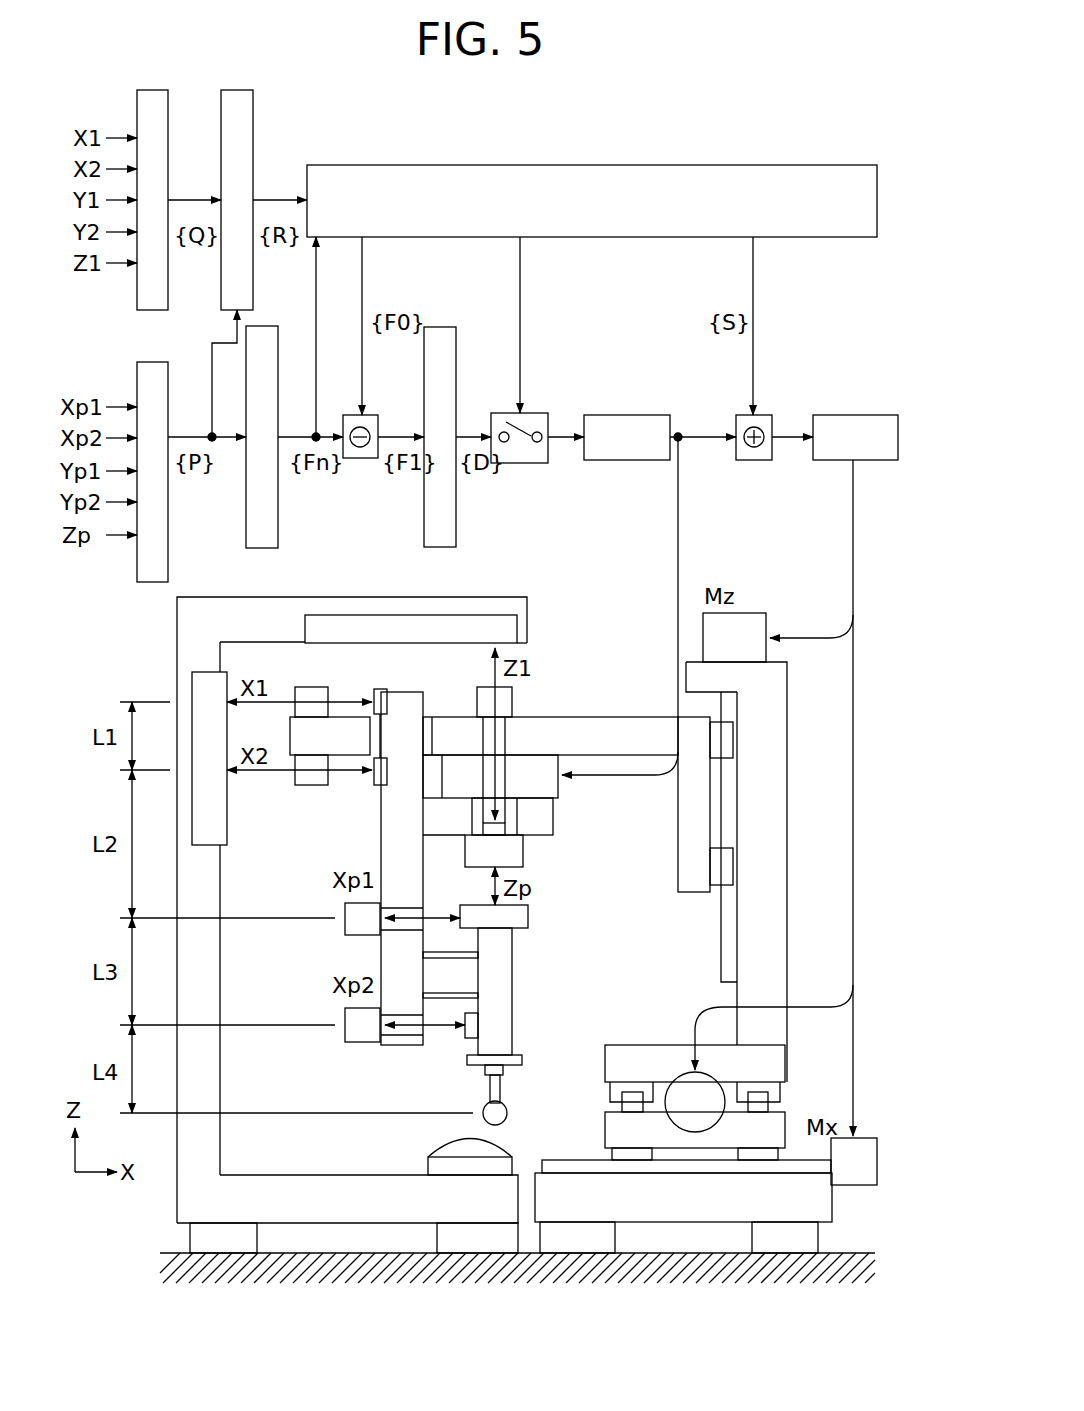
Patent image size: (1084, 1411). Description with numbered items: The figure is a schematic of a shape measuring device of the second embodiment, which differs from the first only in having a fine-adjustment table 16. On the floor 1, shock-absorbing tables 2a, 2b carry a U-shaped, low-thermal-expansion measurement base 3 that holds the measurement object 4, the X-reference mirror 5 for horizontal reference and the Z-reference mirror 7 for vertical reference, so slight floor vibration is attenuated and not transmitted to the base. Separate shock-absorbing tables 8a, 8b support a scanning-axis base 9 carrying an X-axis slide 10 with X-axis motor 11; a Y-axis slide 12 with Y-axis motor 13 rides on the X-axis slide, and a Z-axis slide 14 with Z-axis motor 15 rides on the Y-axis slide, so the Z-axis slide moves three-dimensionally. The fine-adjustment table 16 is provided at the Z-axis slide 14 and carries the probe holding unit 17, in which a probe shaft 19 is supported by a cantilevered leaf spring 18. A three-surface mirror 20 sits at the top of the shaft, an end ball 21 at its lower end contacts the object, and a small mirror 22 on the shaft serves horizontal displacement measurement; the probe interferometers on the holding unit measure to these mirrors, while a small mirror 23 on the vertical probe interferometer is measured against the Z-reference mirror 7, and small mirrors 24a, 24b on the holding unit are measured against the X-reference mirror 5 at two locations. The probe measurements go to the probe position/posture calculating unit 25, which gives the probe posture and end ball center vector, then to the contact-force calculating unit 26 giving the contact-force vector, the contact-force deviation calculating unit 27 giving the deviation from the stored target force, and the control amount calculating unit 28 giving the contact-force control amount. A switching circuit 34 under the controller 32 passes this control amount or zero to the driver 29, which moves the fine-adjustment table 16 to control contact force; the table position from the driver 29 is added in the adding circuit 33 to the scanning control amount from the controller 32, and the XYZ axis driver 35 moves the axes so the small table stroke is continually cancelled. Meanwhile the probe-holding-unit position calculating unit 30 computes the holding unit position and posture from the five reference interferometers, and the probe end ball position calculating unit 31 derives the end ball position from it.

The floor 1 is at (175, 1253).
The shock-absorbing table 2a is at (258, 1254).
The shock-absorbing table 2b is at (437, 1254).
The measurement base 3 is at (177, 1190).
The measurement object 4 is at (440, 1148).
The X-reference mirror 5 is at (210, 672).
The Z-reference mirror 7 is at (305, 627).
The shock-absorbing table 8a is at (540, 1254).
The shock-absorbing table 8b is at (752, 1254).
The scanning-axis base 9 is at (832, 1212).
The X-axis slide 10 is at (786, 1122).
The X-axis motor 11 is at (877, 1150).
The Y-axis slide 12 is at (787, 905).
The Y-axis motor 13 is at (680, 1076).
The Z-axis slide 14 is at (678, 892).
The Z-axis motor 15 is at (768, 613).
The fine-adjustment table 16 is at (558, 798).
The probe holding unit 17 is at (522, 835).
The leaf spring 18 is at (450, 958).
The probe shaft 19 is at (512, 1002).
The three-surface mirror 20 is at (520, 905).
The end ball 21 is at (507, 1113).
The small mirror 22 is at (466, 1040).
The small mirror 23 is at (503, 820).
The small mirror 24a is at (378, 689).
The small mirror 24b is at (378, 785).
The probe position/posture calculating unit 25 is at (168, 527).
The contact-force calculating unit 26 is at (278, 540).
The contact-force deviation calculating unit 27 is at (360, 458).
The control amount calculating unit 28 is at (456, 538).
The driver 29 is at (640, 460).
The probe-holding-unit position calculating unit 30 is at (157, 90).
The probe end ball position calculating unit 31 is at (240, 90).
The controller 32 is at (578, 165).
The adding circuit 33 is at (754, 460).
The switching circuit 34 is at (520, 463).
The XYZ axis driver 35 is at (830, 460).